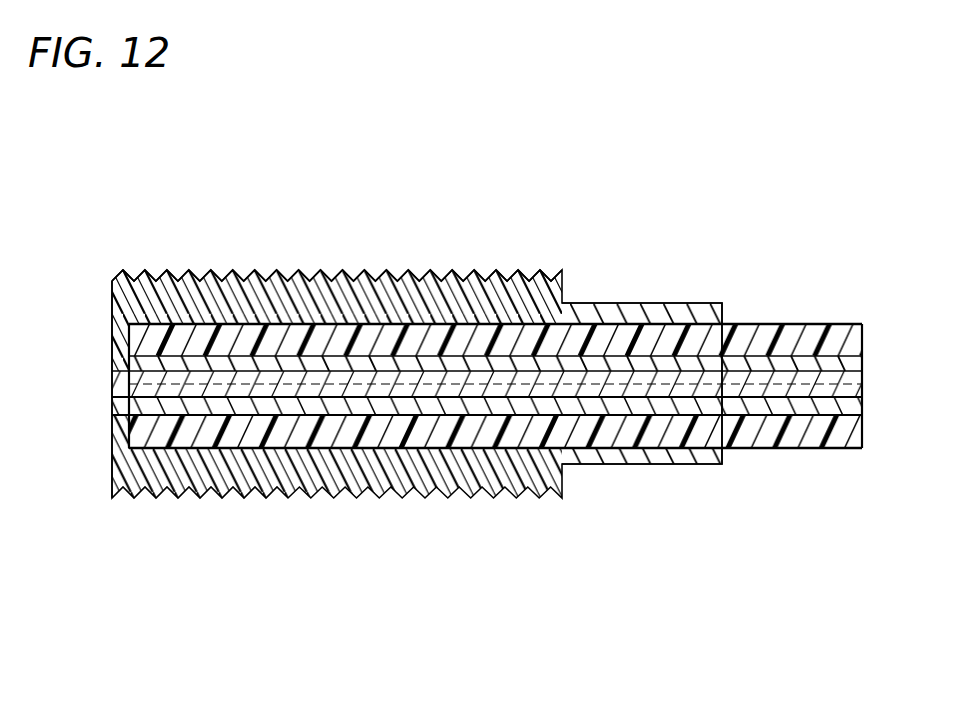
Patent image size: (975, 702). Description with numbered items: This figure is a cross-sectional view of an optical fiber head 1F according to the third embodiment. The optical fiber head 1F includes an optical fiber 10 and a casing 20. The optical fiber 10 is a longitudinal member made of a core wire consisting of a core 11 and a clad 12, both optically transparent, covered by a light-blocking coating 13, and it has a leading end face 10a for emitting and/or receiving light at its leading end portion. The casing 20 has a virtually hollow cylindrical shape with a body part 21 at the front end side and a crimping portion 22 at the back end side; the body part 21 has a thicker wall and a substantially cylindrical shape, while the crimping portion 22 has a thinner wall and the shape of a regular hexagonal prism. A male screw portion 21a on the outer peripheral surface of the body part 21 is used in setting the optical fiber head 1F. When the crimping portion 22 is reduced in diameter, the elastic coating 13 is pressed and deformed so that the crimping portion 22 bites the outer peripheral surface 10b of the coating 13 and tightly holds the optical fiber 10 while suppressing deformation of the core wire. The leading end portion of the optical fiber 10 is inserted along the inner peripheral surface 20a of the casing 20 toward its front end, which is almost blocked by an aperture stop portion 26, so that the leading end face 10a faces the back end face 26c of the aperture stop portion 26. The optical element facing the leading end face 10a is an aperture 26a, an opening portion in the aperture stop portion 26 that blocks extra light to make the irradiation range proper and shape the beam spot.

The optical fiber head 1F is at (738, 189).
The optical fiber 10 is at (801, 304).
The leading end face 10a is at (125, 425).
The outer peripheral surface 10b is at (507, 447).
The core 11 is at (625, 388).
The clad 12 is at (698, 410).
The coating 13 is at (765, 430).
The casing 20 is at (134, 255).
The inner peripheral surface 20a is at (392, 335).
The body part 21 is at (513, 302).
The male screw portion 21a is at (254, 270).
The crimping portion 22 is at (622, 317).
The aperture stop portion 26 is at (120, 342).
The aperture 26a is at (120, 388).
The back end face 26c is at (138, 435).